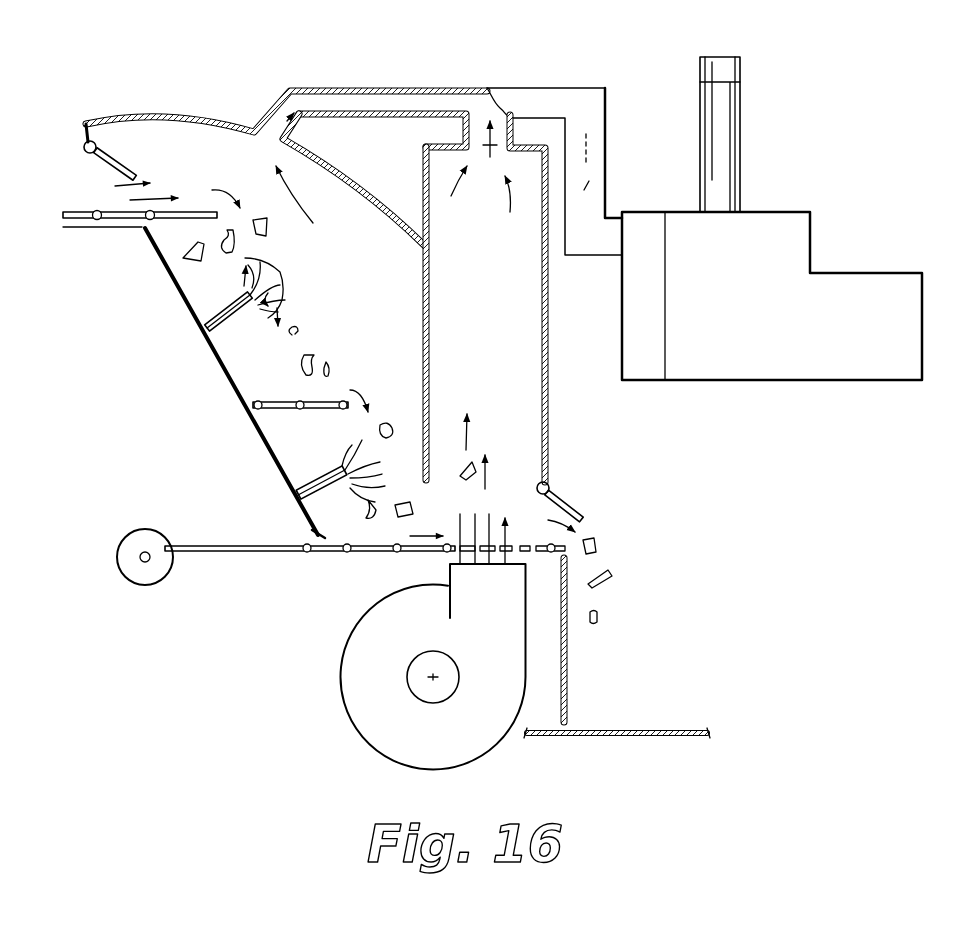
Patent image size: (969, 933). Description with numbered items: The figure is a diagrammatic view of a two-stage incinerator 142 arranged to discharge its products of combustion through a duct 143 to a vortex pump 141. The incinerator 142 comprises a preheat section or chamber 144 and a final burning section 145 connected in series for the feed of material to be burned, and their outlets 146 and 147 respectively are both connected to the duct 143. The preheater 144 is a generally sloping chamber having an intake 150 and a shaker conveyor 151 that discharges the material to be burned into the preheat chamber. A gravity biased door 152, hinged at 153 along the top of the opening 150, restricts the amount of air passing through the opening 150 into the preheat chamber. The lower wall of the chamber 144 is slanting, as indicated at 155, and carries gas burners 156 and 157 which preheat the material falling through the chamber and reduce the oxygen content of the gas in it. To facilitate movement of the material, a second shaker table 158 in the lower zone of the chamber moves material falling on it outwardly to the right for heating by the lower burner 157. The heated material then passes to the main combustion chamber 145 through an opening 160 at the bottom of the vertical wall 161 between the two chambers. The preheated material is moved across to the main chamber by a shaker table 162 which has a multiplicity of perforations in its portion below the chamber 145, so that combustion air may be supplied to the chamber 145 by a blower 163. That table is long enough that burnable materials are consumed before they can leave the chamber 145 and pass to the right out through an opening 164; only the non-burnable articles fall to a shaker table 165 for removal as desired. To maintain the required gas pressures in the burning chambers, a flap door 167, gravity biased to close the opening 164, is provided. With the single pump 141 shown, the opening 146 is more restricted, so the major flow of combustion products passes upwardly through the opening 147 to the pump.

The vortex pump 141 is at (742, 314).
The two-stage incinerator 142 is at (388, 160).
The duct 143 is at (590, 157).
The preheat section or chamber 144 is at (260, 187).
The final burning section 145 is at (490, 325).
The outlet of preheat chamber 146 is at (282, 103).
The outlet of final burning section 147 is at (514, 134).
The intake 150 is at (109, 177).
The shaker conveyor 151 is at (127, 221).
The gravity biased door 152 is at (130, 172).
The hinge 153 is at (96, 147).
The slanting lower wall 155 is at (224, 368).
The gas burner 156 is at (218, 306).
The gas burner 157 is at (306, 480).
The second shaker table 158 is at (282, 410).
The opening 160 is at (420, 505).
The vertical wall 161 is at (421, 302).
The shaker table 162 is at (352, 553).
The blower 163 is at (345, 685).
The opening 164 is at (557, 488).
The shaker table 165 is at (597, 730).
The flap door 167 is at (568, 505).